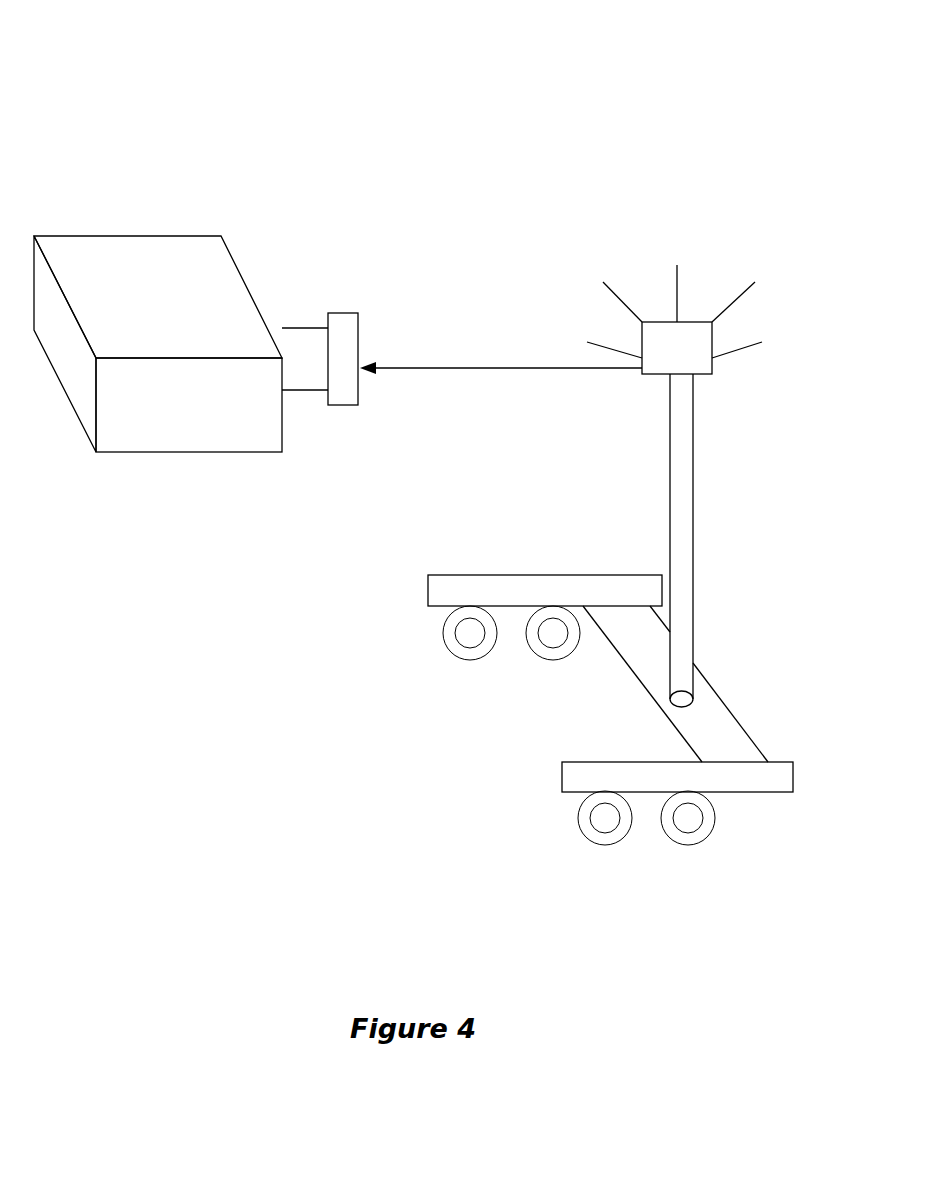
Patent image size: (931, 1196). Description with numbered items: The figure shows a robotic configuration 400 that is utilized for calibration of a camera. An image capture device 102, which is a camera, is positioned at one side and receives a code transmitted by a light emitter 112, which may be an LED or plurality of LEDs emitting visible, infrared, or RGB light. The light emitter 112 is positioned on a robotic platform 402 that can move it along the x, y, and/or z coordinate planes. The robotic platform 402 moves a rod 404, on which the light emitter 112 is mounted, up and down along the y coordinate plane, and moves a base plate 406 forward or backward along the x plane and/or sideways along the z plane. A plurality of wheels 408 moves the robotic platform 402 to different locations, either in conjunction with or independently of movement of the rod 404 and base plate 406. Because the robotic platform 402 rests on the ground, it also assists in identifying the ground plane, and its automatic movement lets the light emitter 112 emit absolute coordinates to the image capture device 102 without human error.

The robotic configuration 400 is at (368, 72).
The image capture device 102 is at (188, 452).
The light emitter 112 is at (712, 335).
The robotic platform 402 is at (558, 516).
The rod 404 is at (693, 470).
The base plate 406 is at (695, 732).
The wheels 408 is at (568, 667).